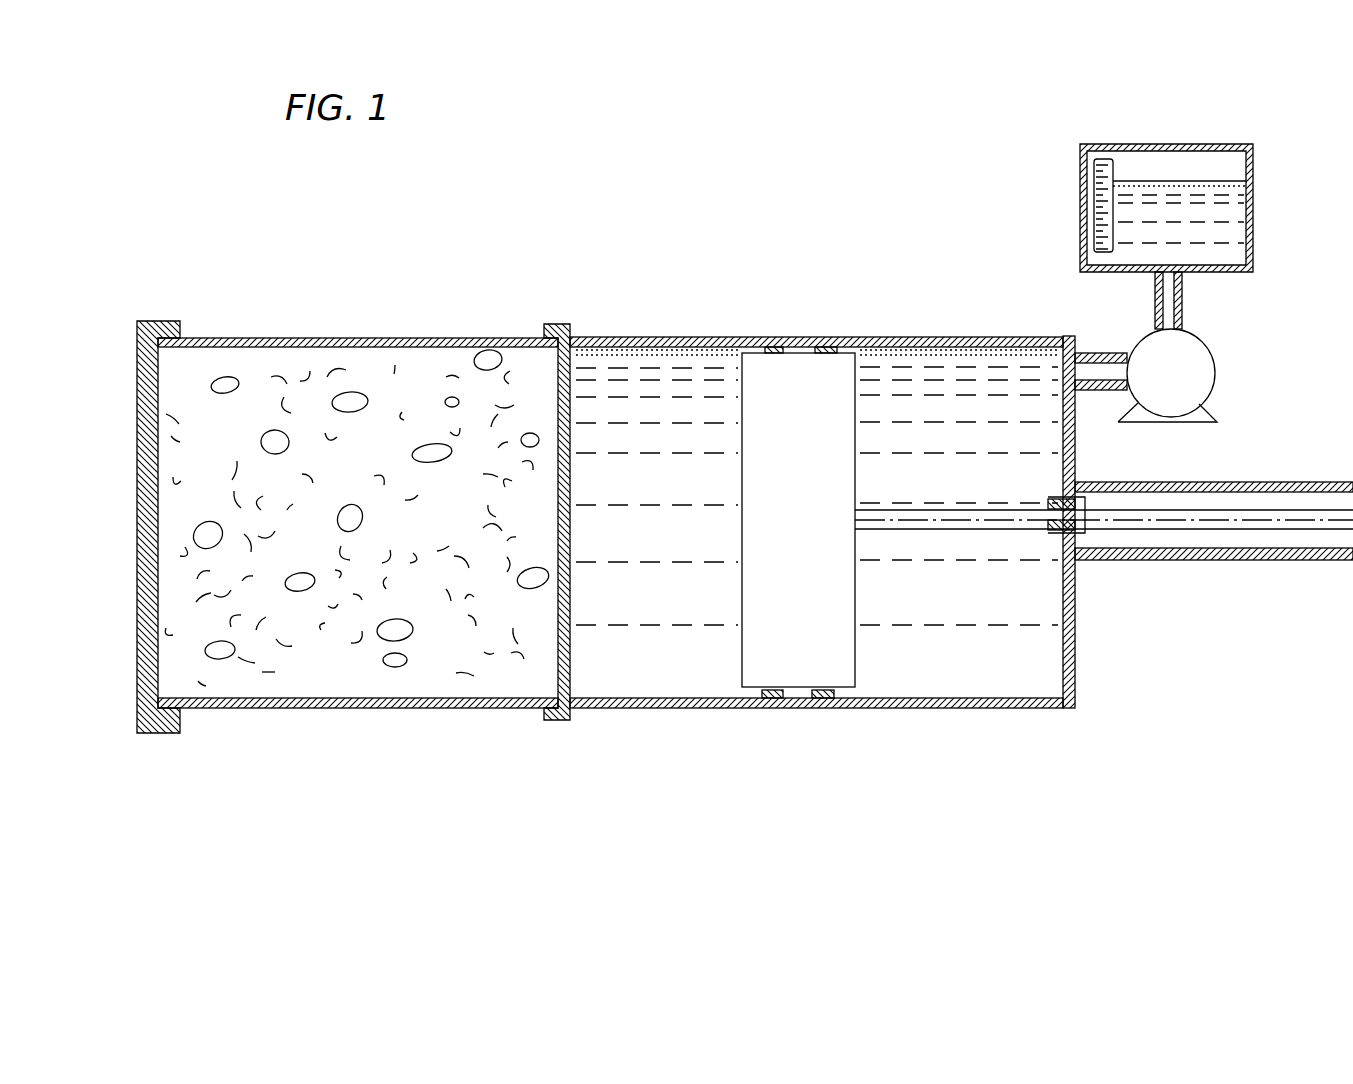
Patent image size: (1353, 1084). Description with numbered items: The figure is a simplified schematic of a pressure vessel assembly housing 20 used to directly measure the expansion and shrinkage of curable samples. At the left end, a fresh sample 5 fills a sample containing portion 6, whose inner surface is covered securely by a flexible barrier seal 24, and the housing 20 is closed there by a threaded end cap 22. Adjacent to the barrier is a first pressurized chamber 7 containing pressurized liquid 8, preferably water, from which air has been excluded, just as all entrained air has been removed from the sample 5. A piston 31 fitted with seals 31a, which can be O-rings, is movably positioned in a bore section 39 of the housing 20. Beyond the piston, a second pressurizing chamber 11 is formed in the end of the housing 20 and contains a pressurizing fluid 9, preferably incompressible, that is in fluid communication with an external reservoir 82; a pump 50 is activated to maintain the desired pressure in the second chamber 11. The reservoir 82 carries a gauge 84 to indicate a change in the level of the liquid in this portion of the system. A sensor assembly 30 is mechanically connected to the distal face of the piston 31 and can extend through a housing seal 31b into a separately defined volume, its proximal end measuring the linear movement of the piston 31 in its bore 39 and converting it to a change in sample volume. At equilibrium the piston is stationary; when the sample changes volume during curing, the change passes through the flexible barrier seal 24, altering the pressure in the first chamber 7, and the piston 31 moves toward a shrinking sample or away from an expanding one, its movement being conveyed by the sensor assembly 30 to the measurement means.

The fresh sample 5 is at (235, 660).
The sample containing portion 6 is at (326, 375).
The first pressurized chamber 7 is at (700, 354).
The pressurized liquid 8 is at (612, 376).
The pressurizing fluid 9 is at (1048, 607).
The second pressurizing chamber 11 is at (988, 352).
The pressure vessel assembly housing 20 is at (128, 323).
The threaded end cap 22 is at (136, 586).
The flexible barrier seal 24 is at (544, 694).
The sensor assembly 30 is at (1168, 474).
The piston 31 is at (850, 635).
The seals 31a is at (780, 347).
The housing seal 31b is at (1083, 574).
The bore section 39 is at (620, 340).
The pump 50 is at (1208, 362).
The external reservoir 82 is at (1078, 248).
The gauge 84 is at (1115, 172).